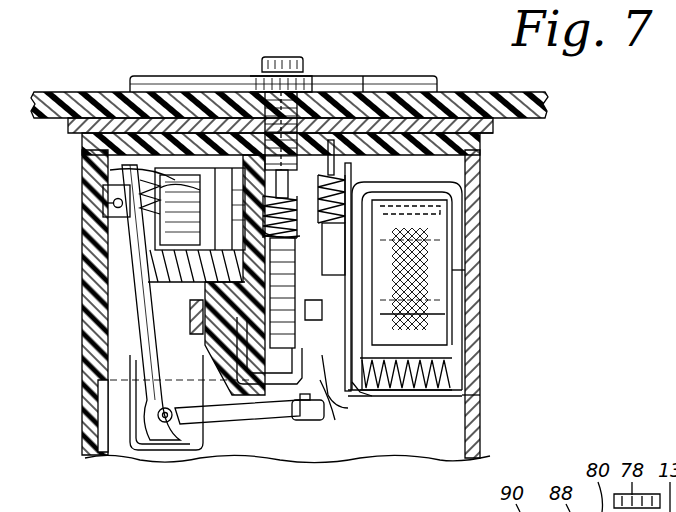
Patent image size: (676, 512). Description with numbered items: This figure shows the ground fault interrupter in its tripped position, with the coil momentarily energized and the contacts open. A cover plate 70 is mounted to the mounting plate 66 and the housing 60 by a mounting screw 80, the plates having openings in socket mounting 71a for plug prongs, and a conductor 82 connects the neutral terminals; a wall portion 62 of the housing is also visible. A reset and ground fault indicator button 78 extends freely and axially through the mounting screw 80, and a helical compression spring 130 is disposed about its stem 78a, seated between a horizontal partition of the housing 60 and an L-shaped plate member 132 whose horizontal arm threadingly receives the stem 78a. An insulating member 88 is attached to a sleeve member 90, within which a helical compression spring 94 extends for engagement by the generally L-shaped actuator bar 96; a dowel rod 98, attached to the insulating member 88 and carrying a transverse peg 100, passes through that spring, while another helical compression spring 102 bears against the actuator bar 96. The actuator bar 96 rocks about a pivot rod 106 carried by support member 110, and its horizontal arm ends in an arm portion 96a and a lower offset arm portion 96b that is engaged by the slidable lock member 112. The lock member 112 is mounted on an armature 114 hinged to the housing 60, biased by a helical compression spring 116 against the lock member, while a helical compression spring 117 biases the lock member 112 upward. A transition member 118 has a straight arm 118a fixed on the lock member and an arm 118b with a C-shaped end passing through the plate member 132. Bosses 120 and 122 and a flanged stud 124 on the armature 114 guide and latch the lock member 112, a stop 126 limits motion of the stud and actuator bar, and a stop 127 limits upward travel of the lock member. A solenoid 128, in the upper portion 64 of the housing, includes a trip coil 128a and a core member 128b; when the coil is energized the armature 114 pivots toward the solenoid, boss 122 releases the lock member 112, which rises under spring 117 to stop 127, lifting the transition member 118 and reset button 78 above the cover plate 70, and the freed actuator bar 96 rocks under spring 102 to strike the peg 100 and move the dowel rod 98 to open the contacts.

The housing 60 is at (80, 400).
The housing wall lower portion 62 is at (478, 436).
The upper portion of housing 64 is at (478, 316).
The mounting plate 66 is at (492, 133).
The cover plate 70 is at (450, 100).
The socket mounting 71a is at (397, 76).
The reset and ground fault indicator button 78 is at (265, 57).
The stem of button 78a is at (281, 281).
The mounting screw 80 is at (290, 125).
The conductor 82 is at (190, 326).
The insulating member 88 is at (213, 168).
The sleeve member 90 is at (172, 168).
The helical compression spring 94 is at (110, 170).
The actuator bar 96 is at (134, 246).
The arm portion 96a is at (297, 420).
The lower offset arm portion 96b is at (320, 442).
The dowel rod 98 is at (105, 196).
The peg 100 is at (112, 208).
The helical compression spring 102 is at (165, 263).
The pivot rod 106 is at (186, 455).
The support member 110 is at (136, 456).
The lock member 112 is at (350, 398).
The armature 114 is at (366, 388).
The helical compression spring 116 is at (455, 380).
The helical compression spring 117 is at (363, 84).
The transition member 118 is at (306, 332).
The straight arm 118a is at (319, 315).
The arm 118b is at (322, 241).
The boss 120 is at (398, 314).
The boss 122 is at (412, 325).
The flanged stud 124 is at (338, 405).
The stop 126 is at (280, 418).
The stop 127 is at (396, 215).
The solenoid 128 is at (458, 212).
The trip coil 128a is at (450, 244).
The core member 128b is at (458, 284).
The helical compression spring 130 is at (325, 150).
The L-shaped plate member 132 is at (299, 217).